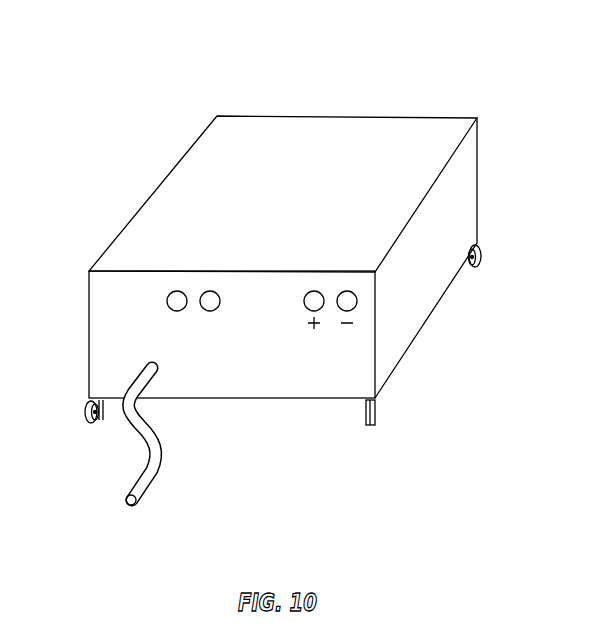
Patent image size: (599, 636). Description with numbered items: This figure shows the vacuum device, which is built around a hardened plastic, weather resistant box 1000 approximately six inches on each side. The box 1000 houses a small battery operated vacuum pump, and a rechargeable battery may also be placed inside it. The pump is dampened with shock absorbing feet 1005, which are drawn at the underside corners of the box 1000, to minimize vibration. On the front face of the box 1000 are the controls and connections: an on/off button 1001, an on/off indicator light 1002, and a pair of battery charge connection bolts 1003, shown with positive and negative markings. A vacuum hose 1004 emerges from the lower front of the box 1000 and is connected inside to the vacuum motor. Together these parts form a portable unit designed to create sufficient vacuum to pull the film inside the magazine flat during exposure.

The box 1000 is at (151, 58).
The on/off button 1001 is at (167, 303).
The on/off indicator light 1002 is at (209, 291).
The battery charge connection bolts 1003 is at (313, 291).
The vacuum hose 1004 is at (157, 477).
The shock absorbing feet 1005 is at (477, 268).